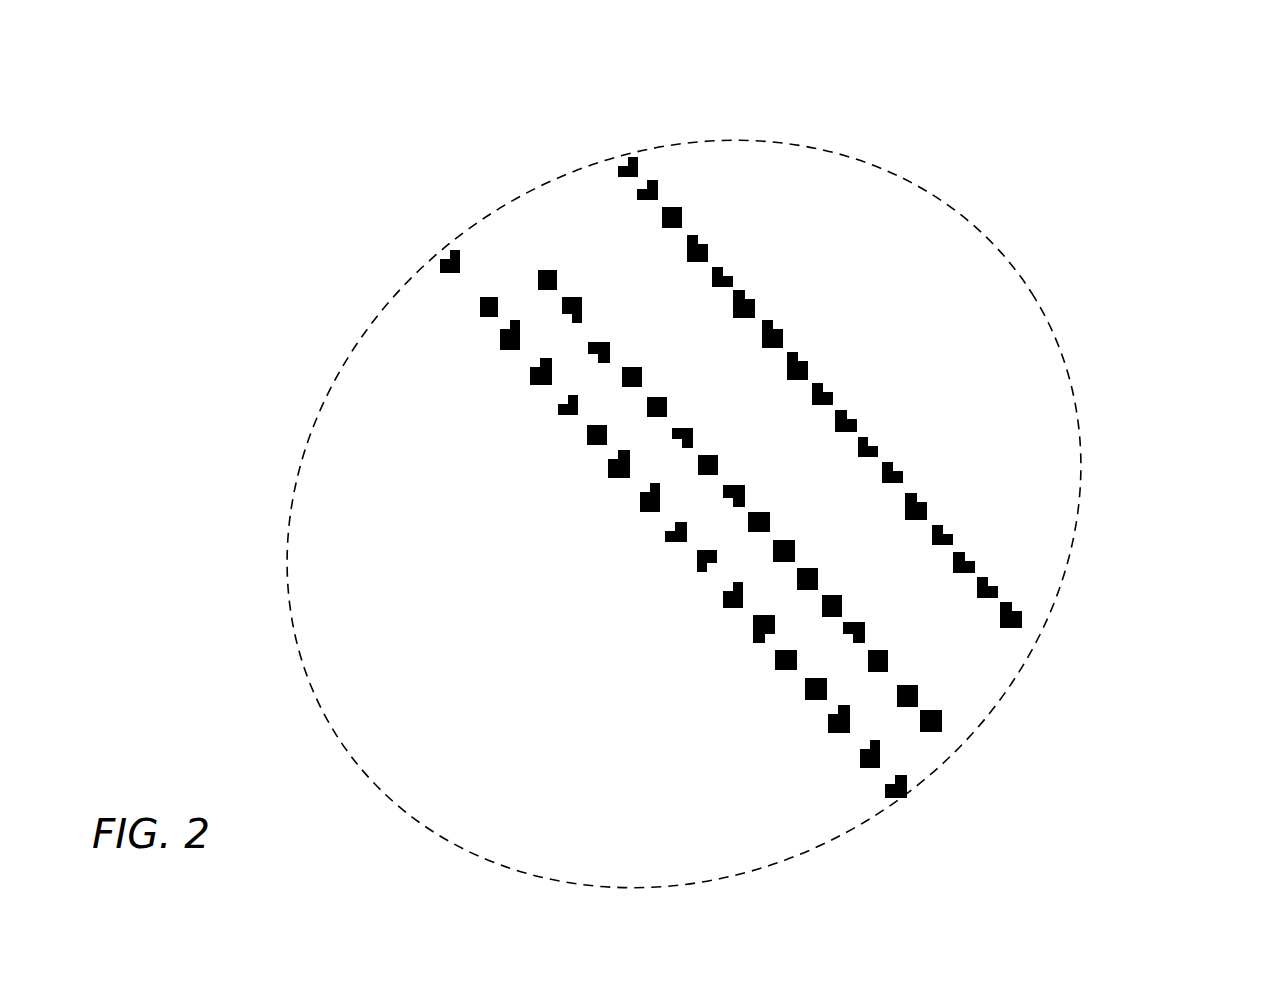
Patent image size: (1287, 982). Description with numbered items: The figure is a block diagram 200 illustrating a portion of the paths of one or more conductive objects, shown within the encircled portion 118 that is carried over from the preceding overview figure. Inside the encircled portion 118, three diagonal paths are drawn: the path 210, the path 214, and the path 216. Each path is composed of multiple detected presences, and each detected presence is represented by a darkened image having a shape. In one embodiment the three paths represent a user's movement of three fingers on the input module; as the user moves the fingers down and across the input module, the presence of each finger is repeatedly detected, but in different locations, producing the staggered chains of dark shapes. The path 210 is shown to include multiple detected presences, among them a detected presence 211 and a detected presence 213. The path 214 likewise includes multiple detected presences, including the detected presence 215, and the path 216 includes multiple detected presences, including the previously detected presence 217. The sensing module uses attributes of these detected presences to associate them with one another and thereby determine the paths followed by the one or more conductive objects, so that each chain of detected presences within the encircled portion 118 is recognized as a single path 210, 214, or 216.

The block diagram 200 is at (1166, 62).
The encircled portion 118 is at (320, 406).
The path 210 is at (491, 483).
The detected presence 211 is at (442, 258).
The detected presence 213 is at (341, 240).
The path 214 is at (579, 433).
The detected presence 215 is at (379, 210).
The path 216 is at (816, 360).
The previously detected presence 217 is at (763, 134).